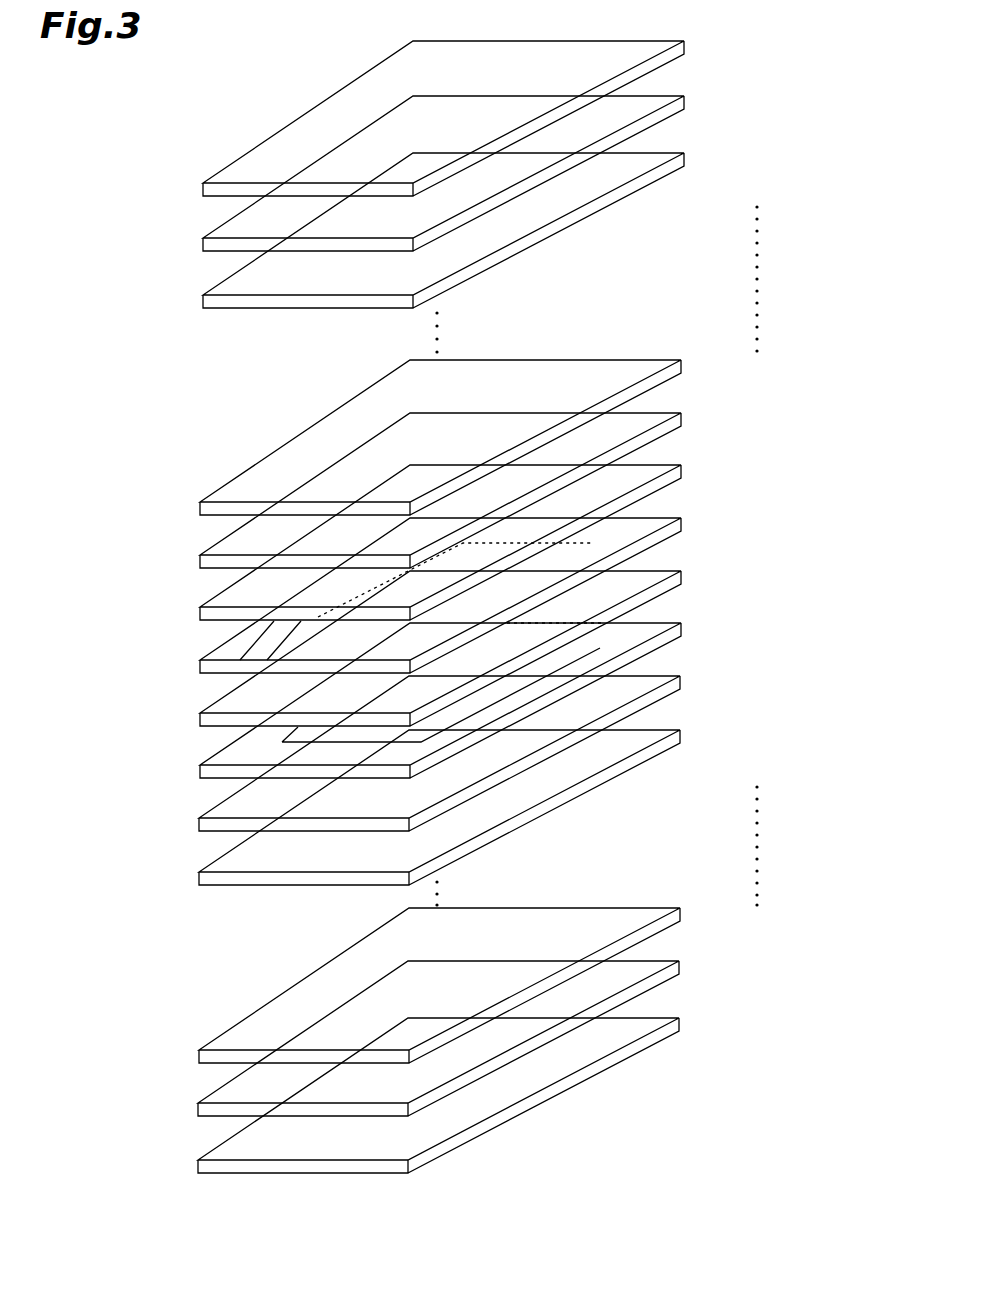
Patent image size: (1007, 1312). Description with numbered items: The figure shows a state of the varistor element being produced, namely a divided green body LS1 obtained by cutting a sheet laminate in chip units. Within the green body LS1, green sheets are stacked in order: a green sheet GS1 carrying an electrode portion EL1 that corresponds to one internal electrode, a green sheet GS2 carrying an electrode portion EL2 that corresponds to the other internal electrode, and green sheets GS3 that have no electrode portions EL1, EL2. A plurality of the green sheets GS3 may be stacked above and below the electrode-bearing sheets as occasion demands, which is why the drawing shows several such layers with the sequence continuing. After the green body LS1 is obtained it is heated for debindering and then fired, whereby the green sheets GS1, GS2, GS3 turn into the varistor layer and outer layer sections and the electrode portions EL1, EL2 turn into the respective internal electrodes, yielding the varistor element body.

The green body LS1 is at (128, 1180).
The green sheet without electrode portion GS3 is at (686, 46).
The green sheet with electrode portion EL1 GS1 is at (686, 523).
The green sheet with electrode portion EL2 GS2 is at (686, 628).
The electrode portion EL1 is at (266, 641).
The electrode portion EL2 is at (314, 742).